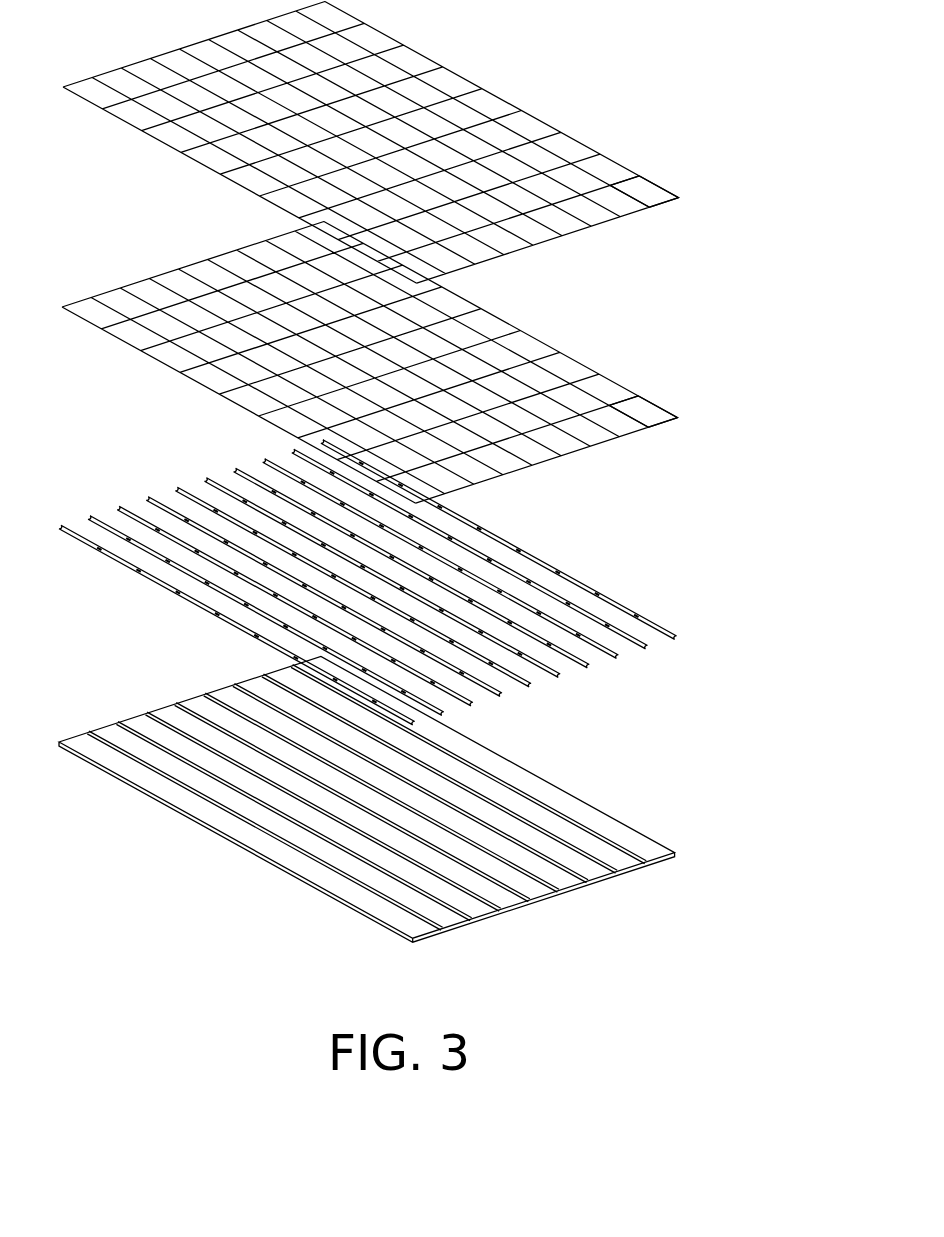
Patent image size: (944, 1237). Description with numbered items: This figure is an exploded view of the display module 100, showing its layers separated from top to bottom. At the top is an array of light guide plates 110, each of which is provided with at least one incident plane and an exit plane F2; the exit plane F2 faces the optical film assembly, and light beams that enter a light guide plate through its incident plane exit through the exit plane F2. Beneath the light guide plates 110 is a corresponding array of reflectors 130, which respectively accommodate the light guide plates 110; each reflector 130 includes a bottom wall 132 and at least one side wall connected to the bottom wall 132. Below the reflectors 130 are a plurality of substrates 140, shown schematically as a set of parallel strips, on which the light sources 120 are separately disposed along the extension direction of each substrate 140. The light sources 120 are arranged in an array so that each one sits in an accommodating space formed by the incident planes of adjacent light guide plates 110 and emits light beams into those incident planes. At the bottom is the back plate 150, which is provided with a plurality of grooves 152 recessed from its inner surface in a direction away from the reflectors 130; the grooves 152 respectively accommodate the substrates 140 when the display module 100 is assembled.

The display module 100 is at (461, 472).
The light guide plates 110 is at (426, 143).
The exit plane F2 is at (678, 179).
The reflectors 130 is at (426, 363).
The bottom wall 132 is at (676, 439).
The light sources 120 is at (423, 582).
The substrates 140 is at (688, 633).
The back plate 150 is at (423, 800).
The grooves 152 is at (437, 798).